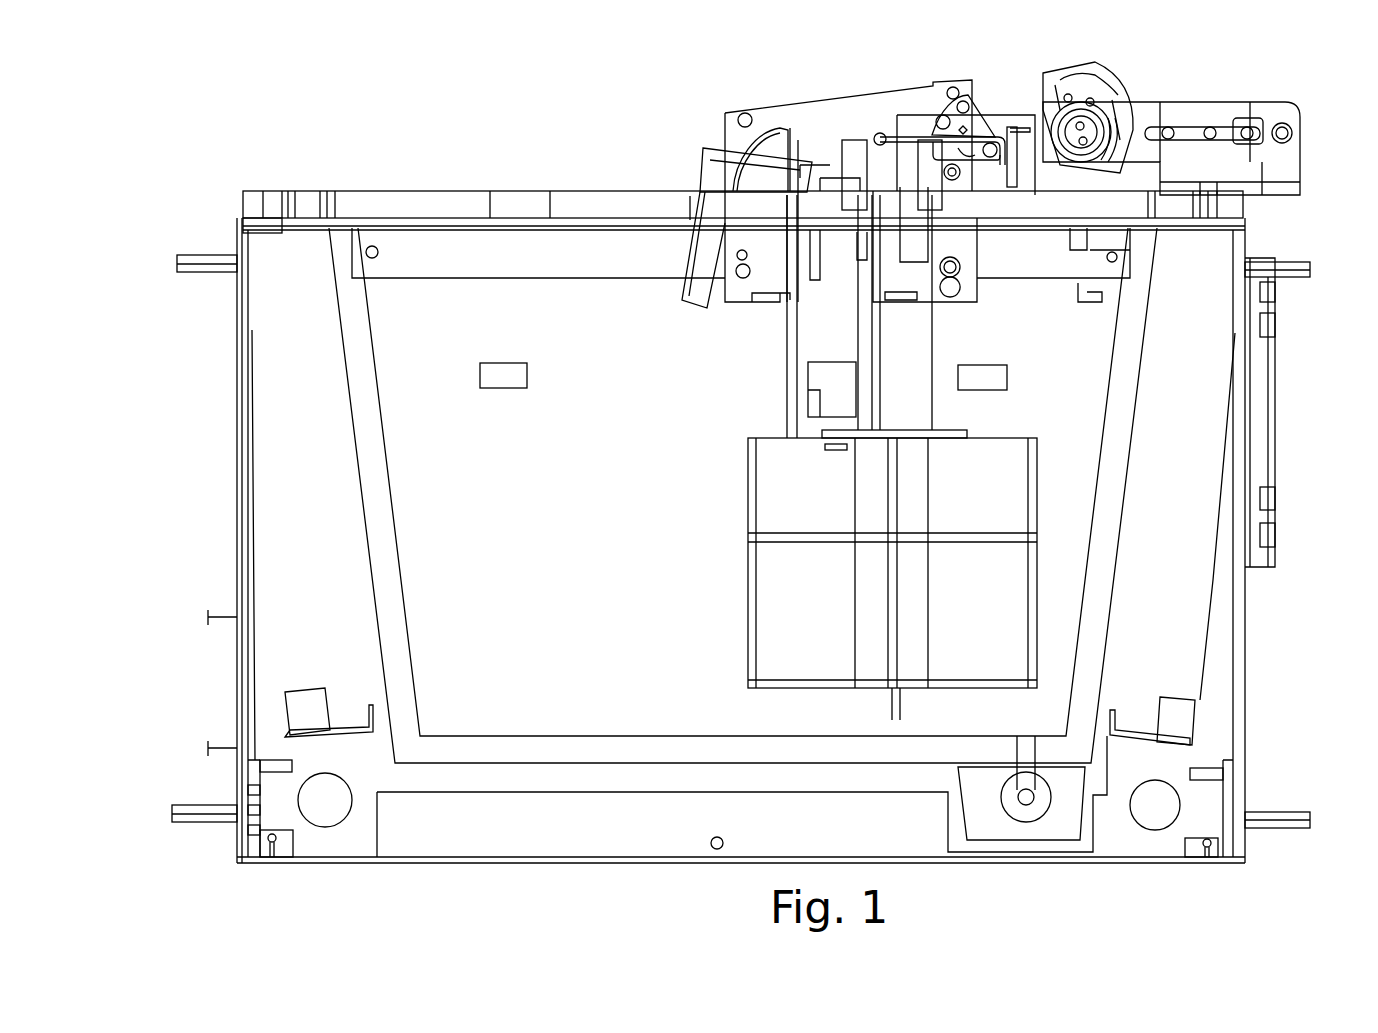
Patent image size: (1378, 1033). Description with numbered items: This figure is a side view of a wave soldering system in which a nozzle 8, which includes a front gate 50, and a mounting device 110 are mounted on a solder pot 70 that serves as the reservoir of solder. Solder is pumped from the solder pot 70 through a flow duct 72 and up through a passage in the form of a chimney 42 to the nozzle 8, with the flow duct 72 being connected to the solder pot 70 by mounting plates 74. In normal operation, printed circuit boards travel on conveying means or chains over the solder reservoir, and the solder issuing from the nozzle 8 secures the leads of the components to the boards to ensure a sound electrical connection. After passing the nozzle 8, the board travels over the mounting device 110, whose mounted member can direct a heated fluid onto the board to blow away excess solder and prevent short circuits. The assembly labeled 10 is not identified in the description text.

The nozzle 8 is at (760, 76).
The latch mechanism 10 is at (980, 122).
The chimney 42 is at (782, 378).
The front gate 50 is at (700, 152).
The solder pot 70 is at (1247, 687).
The flow duct 72 is at (735, 585).
The mounting plates 74 is at (838, 175).
The mounting device 110 is at (1218, 104).